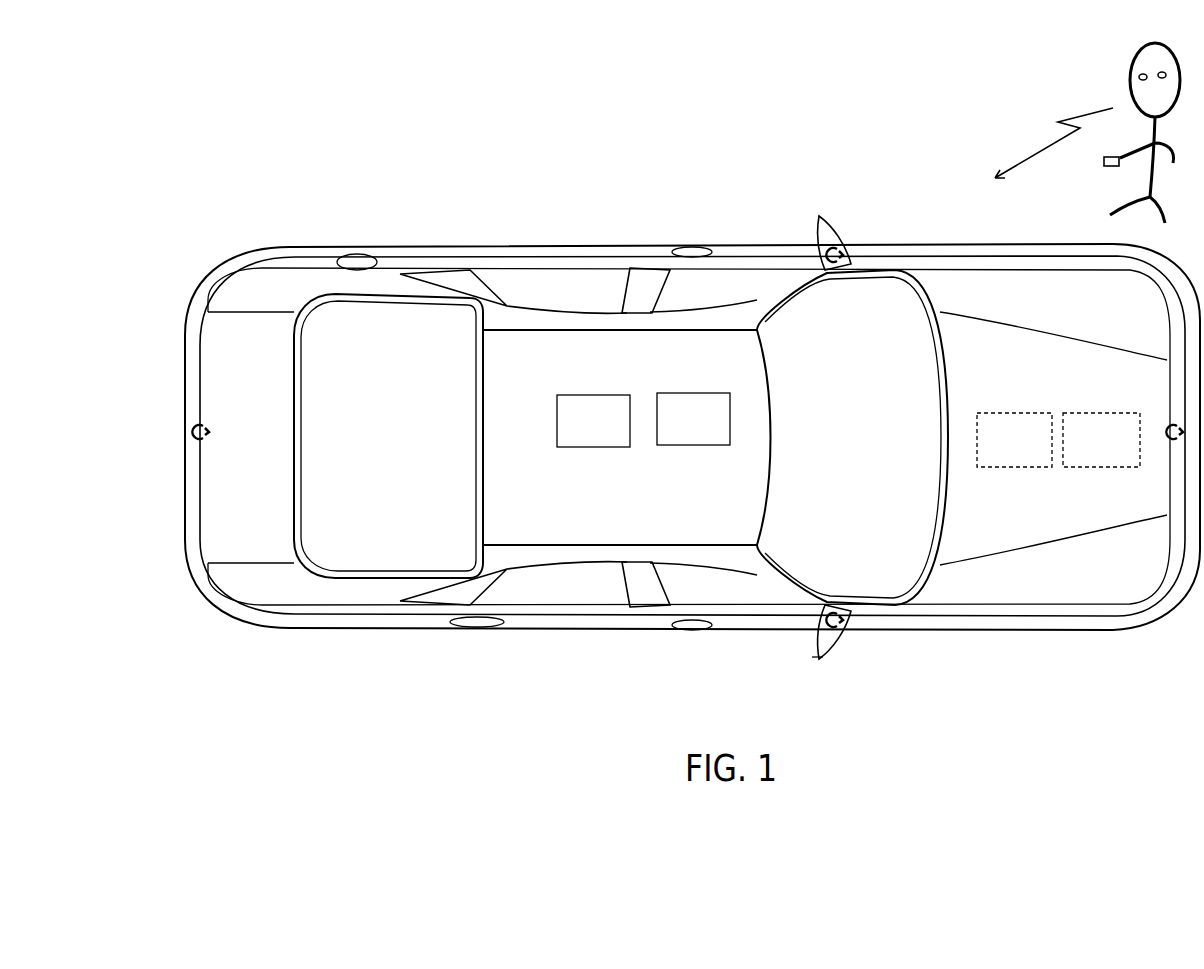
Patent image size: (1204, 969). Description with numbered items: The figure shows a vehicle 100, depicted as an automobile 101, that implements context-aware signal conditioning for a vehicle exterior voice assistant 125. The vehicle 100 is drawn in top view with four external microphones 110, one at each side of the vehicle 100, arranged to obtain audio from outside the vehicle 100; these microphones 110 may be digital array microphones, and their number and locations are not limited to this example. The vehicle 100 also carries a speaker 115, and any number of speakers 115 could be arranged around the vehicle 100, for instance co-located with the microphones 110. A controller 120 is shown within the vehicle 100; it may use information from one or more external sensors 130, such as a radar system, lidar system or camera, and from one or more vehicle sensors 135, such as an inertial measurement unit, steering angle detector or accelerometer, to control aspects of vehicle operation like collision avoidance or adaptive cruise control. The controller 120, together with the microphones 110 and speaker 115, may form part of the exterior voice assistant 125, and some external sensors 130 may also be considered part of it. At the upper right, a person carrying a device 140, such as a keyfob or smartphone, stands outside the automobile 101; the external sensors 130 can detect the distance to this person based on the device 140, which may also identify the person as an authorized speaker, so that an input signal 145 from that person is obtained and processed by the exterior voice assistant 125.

The vehicle 100 is at (238, 262).
The automobile 101 is at (692, 437).
The external microphones 110 is at (1160, 413).
The speaker 115 is at (617, 437).
The controller 120 is at (1123, 452).
The vehicle exterior voice assistant 125 is at (843, 280).
The external sensors 130 is at (717, 436).
The vehicle sensors 135 is at (1038, 452).
The device 140 is at (1100, 162).
The input signal 145 is at (1088, 112).